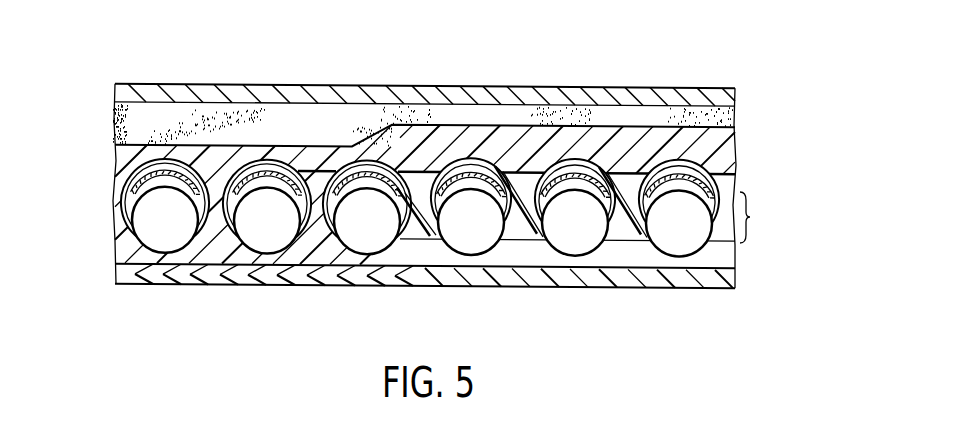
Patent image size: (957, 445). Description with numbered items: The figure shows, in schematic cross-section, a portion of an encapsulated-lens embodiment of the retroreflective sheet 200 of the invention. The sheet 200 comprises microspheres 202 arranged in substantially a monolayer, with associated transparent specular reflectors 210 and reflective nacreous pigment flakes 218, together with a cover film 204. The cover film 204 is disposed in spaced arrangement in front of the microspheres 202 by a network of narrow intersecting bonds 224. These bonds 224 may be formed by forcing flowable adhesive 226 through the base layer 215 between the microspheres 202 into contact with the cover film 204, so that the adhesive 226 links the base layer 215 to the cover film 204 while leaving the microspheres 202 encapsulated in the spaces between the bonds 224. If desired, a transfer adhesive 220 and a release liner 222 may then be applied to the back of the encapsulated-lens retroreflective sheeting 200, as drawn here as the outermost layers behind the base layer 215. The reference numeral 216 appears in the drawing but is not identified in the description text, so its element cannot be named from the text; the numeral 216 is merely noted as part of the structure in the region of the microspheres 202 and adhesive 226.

The retroreflective sheet 200 is at (107, 252).
The microspheres 202 is at (588, 240).
The cover film 204 is at (577, 277).
The transparent specular reflectors 210 is at (695, 182).
The base layer 215 is at (774, 217).
The filler web 216 is at (525, 223).
The reflective nacreous pigment flakes 218 is at (699, 166).
The transfer adhesive 220 is at (722, 118).
The release liner 222 is at (618, 97).
The narrow intersecting bonds 224 is at (350, 289).
The flowable adhesive 226 is at (720, 140).